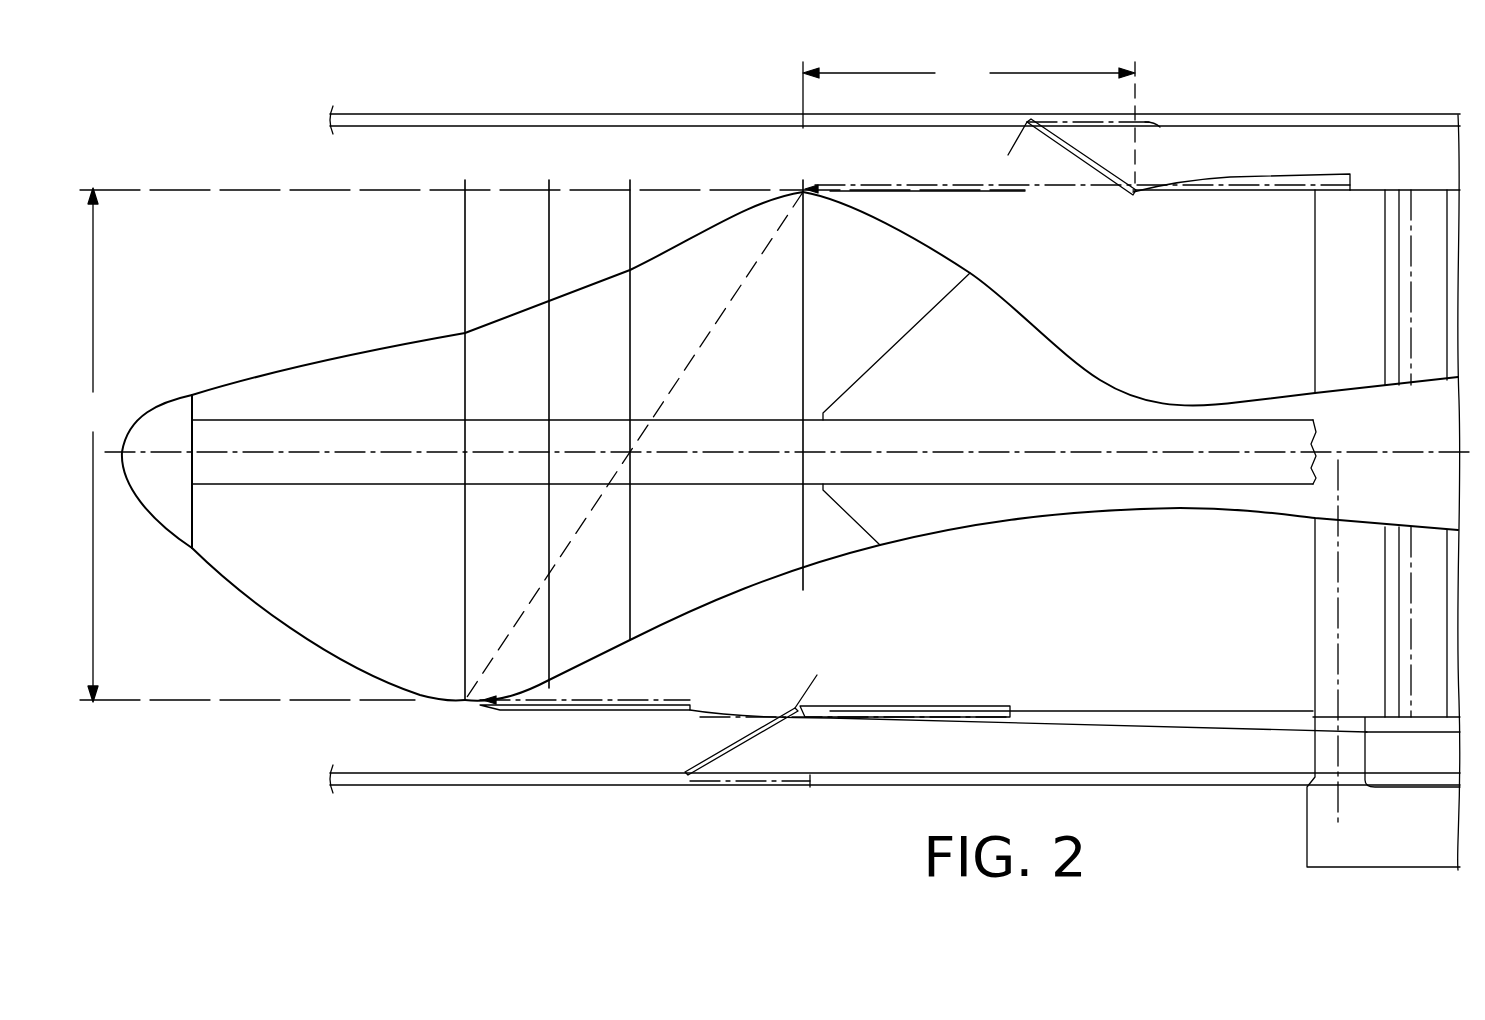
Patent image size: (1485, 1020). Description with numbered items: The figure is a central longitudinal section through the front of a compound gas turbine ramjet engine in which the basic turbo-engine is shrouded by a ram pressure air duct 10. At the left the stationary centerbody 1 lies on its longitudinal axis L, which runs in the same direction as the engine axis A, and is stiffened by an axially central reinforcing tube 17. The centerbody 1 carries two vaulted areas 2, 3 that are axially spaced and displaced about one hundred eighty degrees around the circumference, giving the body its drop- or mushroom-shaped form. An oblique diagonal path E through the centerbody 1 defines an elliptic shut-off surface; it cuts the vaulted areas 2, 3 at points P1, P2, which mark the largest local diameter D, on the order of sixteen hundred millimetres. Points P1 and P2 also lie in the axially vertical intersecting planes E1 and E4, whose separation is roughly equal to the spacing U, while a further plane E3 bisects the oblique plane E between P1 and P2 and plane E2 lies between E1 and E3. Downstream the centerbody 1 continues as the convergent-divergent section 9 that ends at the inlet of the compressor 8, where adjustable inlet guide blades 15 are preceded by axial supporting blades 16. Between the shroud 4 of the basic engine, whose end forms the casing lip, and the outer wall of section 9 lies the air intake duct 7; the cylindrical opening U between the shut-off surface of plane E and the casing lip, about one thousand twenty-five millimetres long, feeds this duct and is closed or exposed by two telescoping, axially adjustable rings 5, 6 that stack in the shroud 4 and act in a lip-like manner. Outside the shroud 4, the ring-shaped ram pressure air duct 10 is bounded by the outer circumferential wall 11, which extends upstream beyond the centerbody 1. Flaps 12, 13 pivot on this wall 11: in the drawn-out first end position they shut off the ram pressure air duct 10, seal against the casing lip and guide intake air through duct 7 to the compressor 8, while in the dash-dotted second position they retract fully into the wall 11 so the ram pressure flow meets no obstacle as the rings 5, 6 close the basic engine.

The centerbody 1 is at (333, 614).
The vaulted area 2 is at (860, 202).
The vaulted area 3 is at (470, 738).
The shroud 4 is at (1382, 190).
The axially adjustable ring 5 is at (915, 706).
The axially adjustable ring 6 is at (980, 705).
The air intake duct 7 is at (1096, 277).
The compressor 8 is at (1403, 646).
The section of the centerbody 9 is at (1058, 385).
The ram pressure air duct 10 is at (1257, 166).
The outer circumferential wall 11 is at (1190, 127).
The flap 12 is at (1060, 147).
The flap 13 is at (770, 785).
The adjustable inlet guide blades 15 is at (1425, 597).
The axial supporting blades 16 is at (1320, 633).
The reinforcing tube 17 is at (693, 487).
The largest relative diameter D is at (552, 445).
The spacing or opening U is at (969, 120).
The longitudinal axis L is at (393, 450).
The engine axis A is at (1426, 452).
The diagonal path E is at (688, 360).
The intersecting plane E1 is at (465, 255).
The intersecting plane E2 is at (549, 262).
The intersecting plane E3 is at (630, 262).
The intersecting plane E4 is at (803, 372).
The intersecting point P1 is at (805, 194).
The intersecting point P2 is at (465, 700).